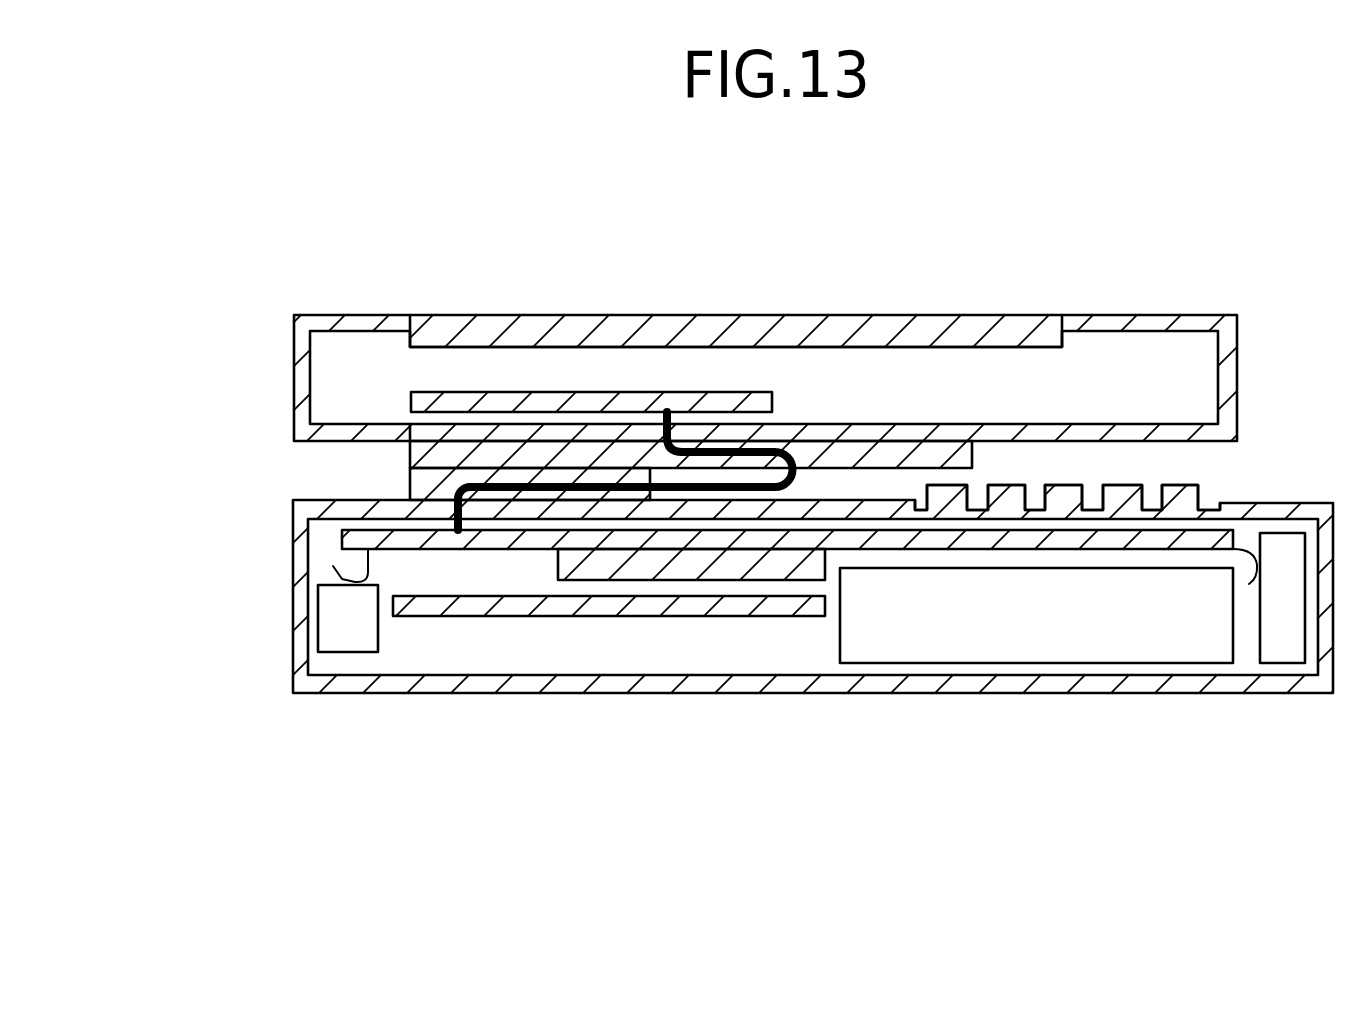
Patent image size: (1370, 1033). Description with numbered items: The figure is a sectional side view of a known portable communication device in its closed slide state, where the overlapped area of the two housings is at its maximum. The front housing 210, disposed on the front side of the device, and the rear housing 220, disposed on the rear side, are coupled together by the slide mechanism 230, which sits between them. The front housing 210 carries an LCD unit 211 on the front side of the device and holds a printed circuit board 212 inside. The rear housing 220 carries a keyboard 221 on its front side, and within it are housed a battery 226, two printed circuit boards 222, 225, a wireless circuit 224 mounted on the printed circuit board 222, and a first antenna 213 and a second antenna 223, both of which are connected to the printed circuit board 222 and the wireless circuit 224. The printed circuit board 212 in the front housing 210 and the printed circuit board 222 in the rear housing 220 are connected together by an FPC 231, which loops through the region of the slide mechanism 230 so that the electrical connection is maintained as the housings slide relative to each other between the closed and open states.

The front housing 210 is at (378, 314).
The LCD unit 211 is at (1043, 314).
The printed circuit board 212 is at (540, 390).
The first antenna 213 is at (316, 610).
The rear housing 220 is at (293, 650).
The keyboard 221 is at (1190, 483).
The printed circuit board 222 is at (343, 538).
The second antenna 223 is at (1290, 633).
The wireless circuit 224 is at (665, 570).
The printed circuit board 225 is at (482, 618).
The battery 226 is at (1058, 632).
The slide mechanism 230 is at (408, 492).
The FPC 231 is at (762, 442).